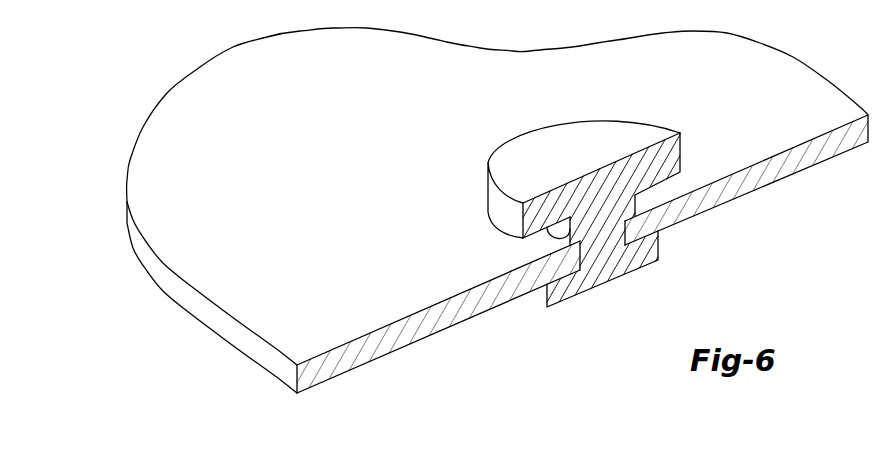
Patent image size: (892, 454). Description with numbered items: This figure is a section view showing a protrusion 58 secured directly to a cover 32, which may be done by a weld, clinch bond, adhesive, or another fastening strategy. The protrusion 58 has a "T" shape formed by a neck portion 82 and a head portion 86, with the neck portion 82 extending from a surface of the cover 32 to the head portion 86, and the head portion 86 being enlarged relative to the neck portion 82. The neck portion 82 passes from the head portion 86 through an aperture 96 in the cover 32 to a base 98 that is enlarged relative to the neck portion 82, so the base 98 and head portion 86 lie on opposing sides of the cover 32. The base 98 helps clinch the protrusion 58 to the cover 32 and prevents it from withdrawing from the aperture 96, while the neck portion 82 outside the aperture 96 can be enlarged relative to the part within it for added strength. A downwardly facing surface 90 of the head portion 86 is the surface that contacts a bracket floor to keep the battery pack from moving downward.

The cover 32 is at (723, 48).
The protrusion 58 is at (573, 137).
The head portion 86 is at (681, 153).
The neck portion 82 is at (638, 206).
The downwardly facing surface 90 is at (538, 242).
The aperture 96 is at (630, 236).
The base 98 is at (546, 293).